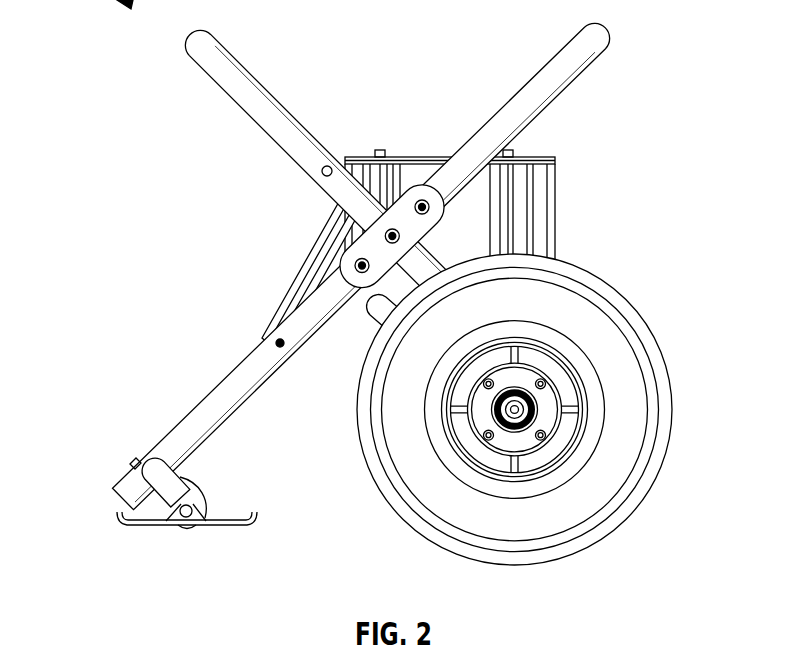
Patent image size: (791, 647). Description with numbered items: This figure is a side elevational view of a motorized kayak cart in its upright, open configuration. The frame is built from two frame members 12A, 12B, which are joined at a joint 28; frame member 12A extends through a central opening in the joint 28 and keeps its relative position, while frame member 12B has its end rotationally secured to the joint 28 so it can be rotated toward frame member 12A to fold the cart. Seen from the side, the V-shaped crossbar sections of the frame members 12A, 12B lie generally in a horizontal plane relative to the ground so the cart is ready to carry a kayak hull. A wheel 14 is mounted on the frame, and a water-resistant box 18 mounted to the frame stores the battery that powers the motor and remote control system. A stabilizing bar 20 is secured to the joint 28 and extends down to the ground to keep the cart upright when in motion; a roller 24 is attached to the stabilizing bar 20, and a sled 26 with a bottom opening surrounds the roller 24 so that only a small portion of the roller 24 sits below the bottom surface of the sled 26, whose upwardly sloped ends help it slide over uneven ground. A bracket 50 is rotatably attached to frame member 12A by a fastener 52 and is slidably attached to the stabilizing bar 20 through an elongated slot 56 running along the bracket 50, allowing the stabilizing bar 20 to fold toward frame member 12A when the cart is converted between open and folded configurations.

The frame member 12A is at (230, 88).
The frame member 12B is at (553, 65).
The wheel 14 is at (637, 404).
The box 18 is at (553, 210).
The stabilizing bar 20 is at (219, 392).
The roller 24 is at (190, 490).
The sled 26 is at (232, 528).
The joint 28 is at (417, 196).
The bracket 50 is at (282, 306).
The fastener 52 is at (318, 172).
The elongated slot 56 is at (317, 262).